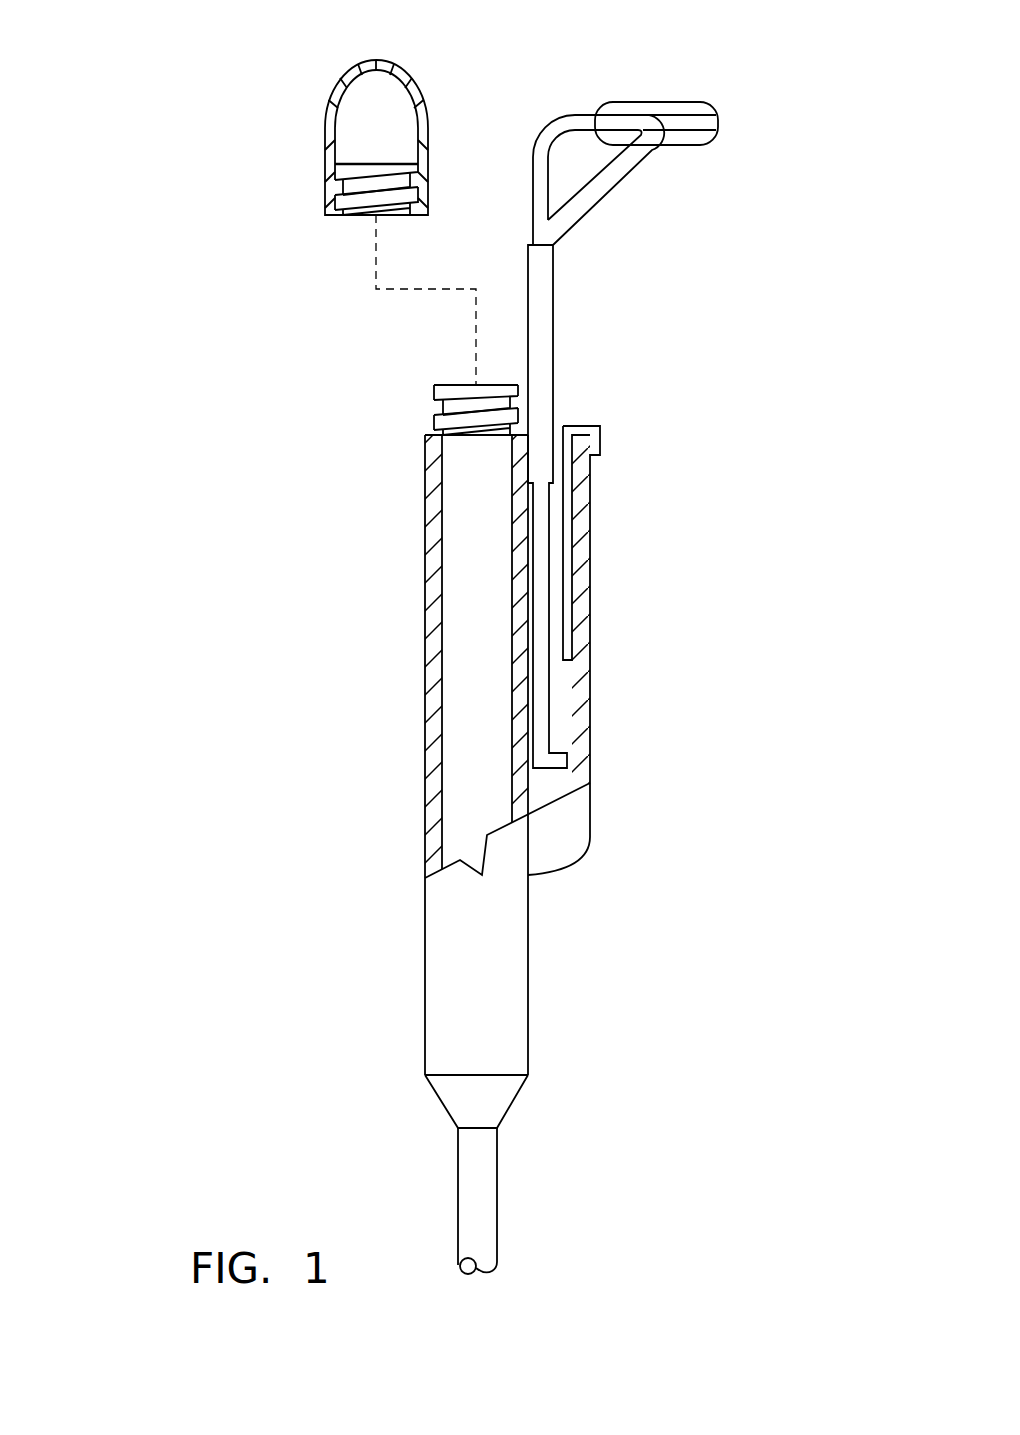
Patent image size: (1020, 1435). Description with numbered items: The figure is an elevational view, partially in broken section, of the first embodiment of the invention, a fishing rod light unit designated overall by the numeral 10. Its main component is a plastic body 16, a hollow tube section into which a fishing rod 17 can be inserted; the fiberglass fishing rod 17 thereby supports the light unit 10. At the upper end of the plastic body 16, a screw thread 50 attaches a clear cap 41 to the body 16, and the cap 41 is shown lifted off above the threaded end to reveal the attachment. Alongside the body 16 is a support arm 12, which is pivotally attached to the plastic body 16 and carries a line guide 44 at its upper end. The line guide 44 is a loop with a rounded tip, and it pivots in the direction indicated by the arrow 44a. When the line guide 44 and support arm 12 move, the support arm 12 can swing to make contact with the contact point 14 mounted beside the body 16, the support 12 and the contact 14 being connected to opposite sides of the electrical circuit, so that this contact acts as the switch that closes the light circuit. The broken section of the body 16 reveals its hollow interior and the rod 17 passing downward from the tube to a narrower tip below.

The light unit 10 is at (232, 274).
The clear cap 41 is at (338, 97).
The line guide 44 is at (695, 107).
The arrow 44a is at (632, 215).
The support arm 12 is at (548, 328).
The contact point 14 is at (583, 426).
The screw thread 50 is at (446, 398).
The plastic body 16 is at (433, 910).
The fishing rod 17 is at (463, 1153).